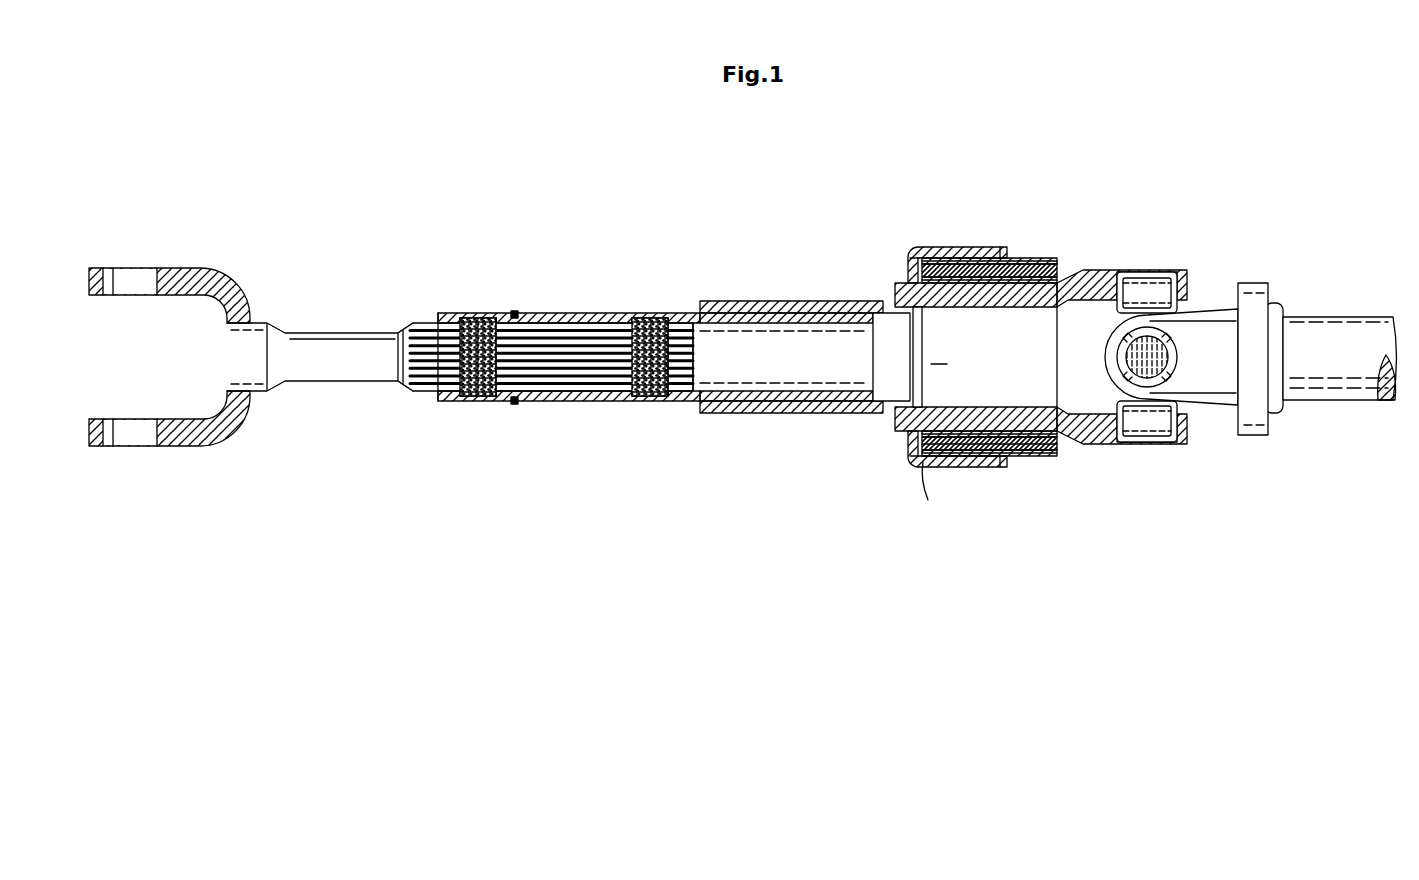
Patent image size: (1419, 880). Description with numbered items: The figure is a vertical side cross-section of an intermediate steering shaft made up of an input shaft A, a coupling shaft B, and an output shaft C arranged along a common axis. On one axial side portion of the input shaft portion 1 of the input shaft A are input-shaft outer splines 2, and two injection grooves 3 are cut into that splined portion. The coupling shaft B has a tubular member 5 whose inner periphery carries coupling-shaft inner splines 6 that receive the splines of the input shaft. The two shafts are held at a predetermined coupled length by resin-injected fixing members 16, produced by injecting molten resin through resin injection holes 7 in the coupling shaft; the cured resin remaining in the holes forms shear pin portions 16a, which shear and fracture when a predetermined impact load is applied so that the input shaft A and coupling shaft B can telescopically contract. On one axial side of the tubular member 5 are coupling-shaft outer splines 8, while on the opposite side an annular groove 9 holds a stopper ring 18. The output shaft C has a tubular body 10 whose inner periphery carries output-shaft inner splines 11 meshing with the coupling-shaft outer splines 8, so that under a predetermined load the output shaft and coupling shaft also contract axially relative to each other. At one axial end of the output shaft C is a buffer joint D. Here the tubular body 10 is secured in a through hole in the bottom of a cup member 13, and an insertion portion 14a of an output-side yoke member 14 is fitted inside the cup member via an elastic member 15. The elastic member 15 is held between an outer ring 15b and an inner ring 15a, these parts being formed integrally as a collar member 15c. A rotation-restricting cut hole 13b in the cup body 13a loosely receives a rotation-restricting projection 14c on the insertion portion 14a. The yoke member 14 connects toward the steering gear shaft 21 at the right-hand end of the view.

The input shaft portion 1 is at (353, 372).
The input-shaft outer splines 2 is at (545, 392).
The injection grooves 3 is at (462, 402).
The tubular member 5 is at (562, 312).
The coupling-shaft inner splines 6 is at (594, 398).
The resin injection holes 7 is at (484, 402).
The coupling-shaft outer splines 8 is at (746, 301).
The annular groove 9 is at (512, 311).
The tubular body 10 is at (760, 412).
The output-shaft inner splines 11 is at (795, 386).
The cup member 13 is at (972, 351).
The cup body 13a is at (1005, 249).
The rotation-restricting cut hole 13b is at (906, 270).
The output-side yoke member 14 is at (997, 351).
The insertion portion 14a is at (1013, 414).
The rotation-restricting projection 14c is at (898, 300).
The elastic member 15 is at (1027, 401).
The inner ring 15a is at (1016, 300).
The outer ring 15b is at (1052, 462).
The collar member 15c is at (1018, 462).
The resin-injected fixing members 16 is at (569, 363).
The shear pin portions 16a is at (478, 340).
The stopper ring 18 is at (518, 311).
The steering gear shaft 21 is at (1325, 400).
The input shaft A is at (351, 318).
The coupling shaft B is at (597, 309).
The output shaft C is at (787, 298).
The buffer joint D is at (972, 244).